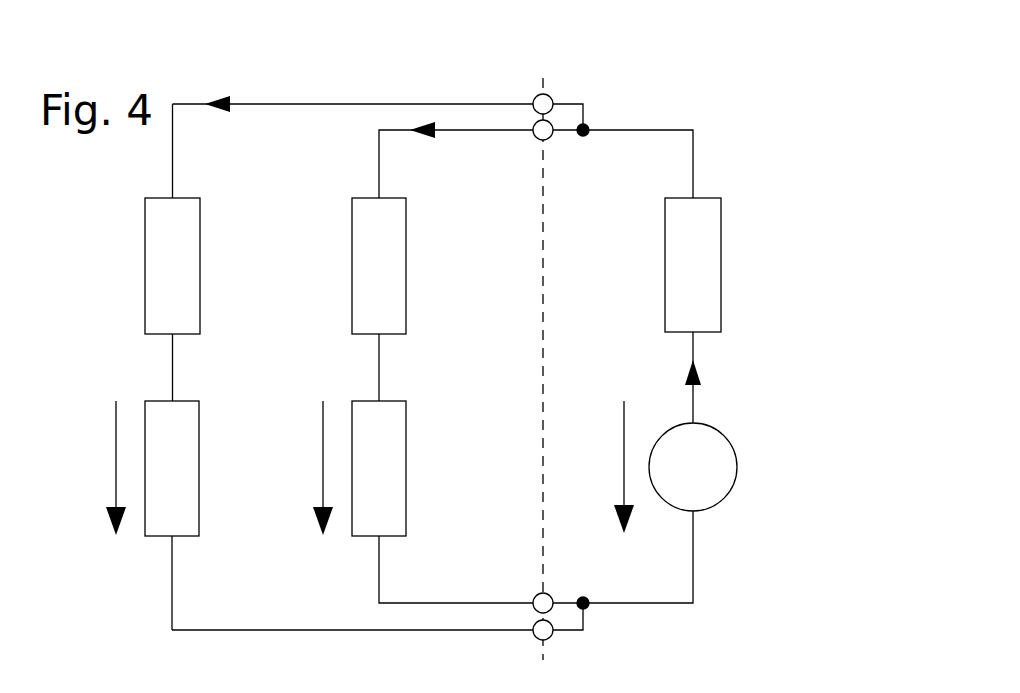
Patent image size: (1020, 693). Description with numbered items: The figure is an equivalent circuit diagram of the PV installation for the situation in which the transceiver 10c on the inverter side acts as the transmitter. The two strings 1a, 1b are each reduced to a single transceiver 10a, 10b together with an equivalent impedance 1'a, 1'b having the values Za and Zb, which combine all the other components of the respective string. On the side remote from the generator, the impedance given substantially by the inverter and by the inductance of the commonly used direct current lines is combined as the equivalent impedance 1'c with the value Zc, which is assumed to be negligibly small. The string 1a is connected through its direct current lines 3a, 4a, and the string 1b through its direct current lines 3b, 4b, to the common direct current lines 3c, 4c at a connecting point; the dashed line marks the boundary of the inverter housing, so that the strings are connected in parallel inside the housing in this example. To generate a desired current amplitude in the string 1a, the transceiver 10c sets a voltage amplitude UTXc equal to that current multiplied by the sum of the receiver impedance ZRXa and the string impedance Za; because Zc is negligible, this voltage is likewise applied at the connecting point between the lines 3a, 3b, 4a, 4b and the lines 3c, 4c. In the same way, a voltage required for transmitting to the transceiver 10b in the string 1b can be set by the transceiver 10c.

The string 1a is at (137, 569).
The string 1b is at (440, 556).
The equivalent impedance 1'a is at (158, 246).
The equivalent impedance 1'b is at (422, 256).
The equivalent impedance 1'c is at (738, 245).
The direct current line 3a is at (460, 103).
The direct current line 3b is at (377, 165).
The direct current line 3c is at (690, 128).
The direct current line 4a is at (315, 631).
The direct current line 4b is at (377, 562).
The direct current line 4c is at (648, 604).
The transceiver 10a is at (143, 412).
The transceiver 10b is at (407, 424).
The transceiver 10c is at (726, 497).